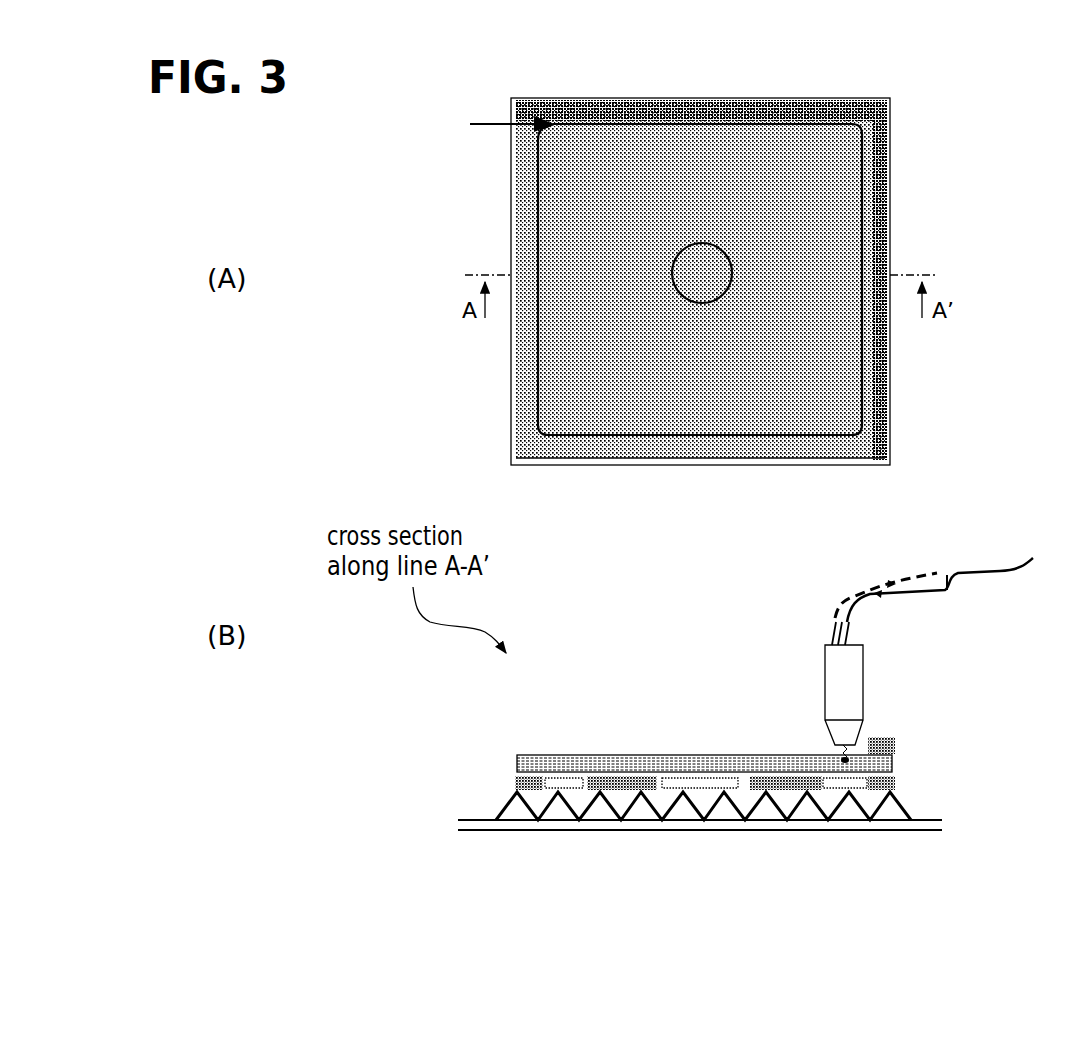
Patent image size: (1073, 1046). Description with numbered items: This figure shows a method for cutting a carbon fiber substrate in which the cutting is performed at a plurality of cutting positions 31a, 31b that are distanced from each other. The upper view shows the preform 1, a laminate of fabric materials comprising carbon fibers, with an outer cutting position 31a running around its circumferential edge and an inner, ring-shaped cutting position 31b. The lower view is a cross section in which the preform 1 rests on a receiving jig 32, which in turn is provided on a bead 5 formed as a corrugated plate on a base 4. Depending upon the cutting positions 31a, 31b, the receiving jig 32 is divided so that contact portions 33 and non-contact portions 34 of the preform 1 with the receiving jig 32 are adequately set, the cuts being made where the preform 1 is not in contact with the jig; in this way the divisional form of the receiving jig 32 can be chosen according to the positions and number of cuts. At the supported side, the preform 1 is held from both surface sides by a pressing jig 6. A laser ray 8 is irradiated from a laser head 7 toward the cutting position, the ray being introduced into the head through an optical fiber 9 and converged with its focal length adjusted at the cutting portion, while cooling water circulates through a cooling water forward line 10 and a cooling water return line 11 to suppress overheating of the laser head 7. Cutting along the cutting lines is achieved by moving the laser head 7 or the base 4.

The preform 1 is at (567, 233).
The base 4 is at (560, 826).
The bead 5 is at (523, 803).
The pressing jig 6 is at (893, 222).
The laser head 7 is at (852, 695).
The laser ray 8 is at (853, 757).
The optical fiber 9 is at (938, 591).
The cooling water forward line 10 is at (947, 575).
The cooling water return line 11 is at (917, 573).
The cutting position 31a is at (862, 228).
The cutting position 31b is at (727, 257).
The receiving jig 32 is at (847, 468).
The contact portion 33 is at (830, 778).
The non-contact portion 34 is at (846, 787).